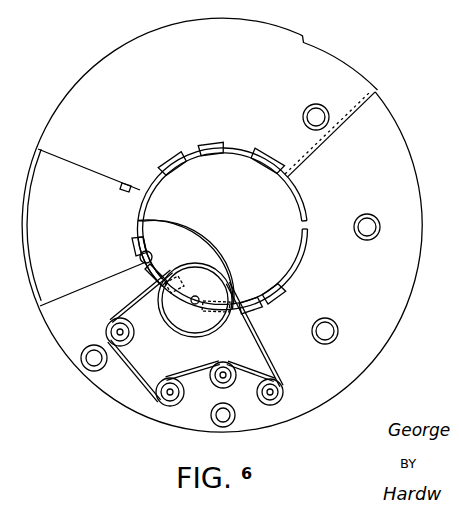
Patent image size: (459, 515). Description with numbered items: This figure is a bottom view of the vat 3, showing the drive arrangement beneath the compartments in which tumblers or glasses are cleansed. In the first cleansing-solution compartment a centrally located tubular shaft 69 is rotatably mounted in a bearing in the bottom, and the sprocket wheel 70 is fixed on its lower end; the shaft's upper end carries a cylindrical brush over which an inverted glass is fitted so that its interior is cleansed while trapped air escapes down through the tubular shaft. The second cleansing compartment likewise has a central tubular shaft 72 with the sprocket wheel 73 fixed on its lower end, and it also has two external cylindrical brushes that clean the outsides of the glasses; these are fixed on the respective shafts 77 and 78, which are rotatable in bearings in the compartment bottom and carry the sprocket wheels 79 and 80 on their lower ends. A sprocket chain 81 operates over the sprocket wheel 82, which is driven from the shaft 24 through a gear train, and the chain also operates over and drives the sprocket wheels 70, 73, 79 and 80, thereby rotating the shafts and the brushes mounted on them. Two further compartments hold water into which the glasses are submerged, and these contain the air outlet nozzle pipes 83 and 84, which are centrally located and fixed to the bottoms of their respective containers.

The disc plate 3 is at (421, 203).
The shaft 24 is at (196, 297).
The tubular shaft 69 is at (124, 329).
The sprocket wheel 70 is at (106, 331).
The central tubular shaft 72 is at (232, 371).
The sprocket wheel 73 is at (220, 388).
The shaft 77 is at (283, 392).
The shaft 78 is at (172, 385).
The sprocket wheel 79 is at (275, 405).
The sprocket wheel 80 is at (168, 407).
The sprocket chain 81 is at (261, 340).
The sprocket wheel 82 is at (214, 325).
The air outlet nozzle pipe 83 is at (337, 324).
The air outlet nozzle pipe 84 is at (370, 216).